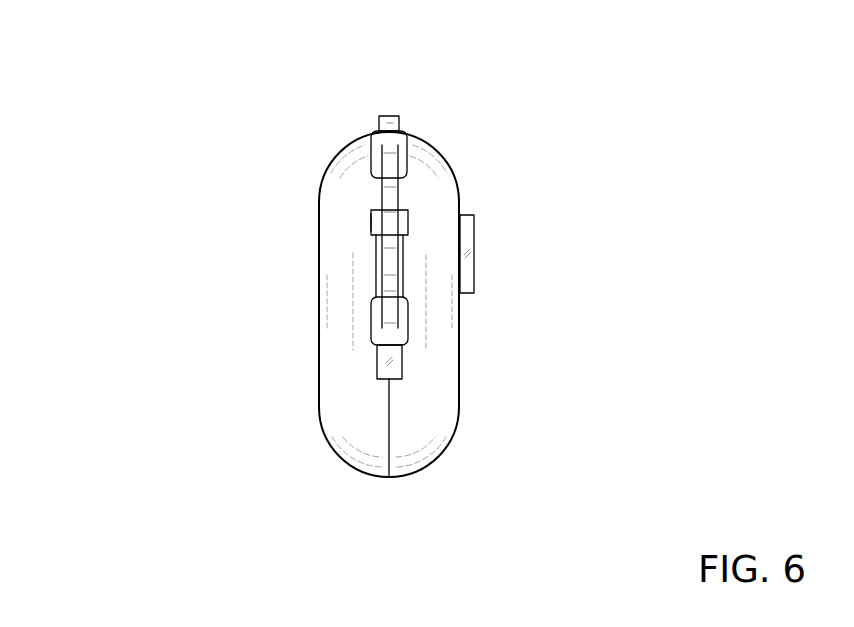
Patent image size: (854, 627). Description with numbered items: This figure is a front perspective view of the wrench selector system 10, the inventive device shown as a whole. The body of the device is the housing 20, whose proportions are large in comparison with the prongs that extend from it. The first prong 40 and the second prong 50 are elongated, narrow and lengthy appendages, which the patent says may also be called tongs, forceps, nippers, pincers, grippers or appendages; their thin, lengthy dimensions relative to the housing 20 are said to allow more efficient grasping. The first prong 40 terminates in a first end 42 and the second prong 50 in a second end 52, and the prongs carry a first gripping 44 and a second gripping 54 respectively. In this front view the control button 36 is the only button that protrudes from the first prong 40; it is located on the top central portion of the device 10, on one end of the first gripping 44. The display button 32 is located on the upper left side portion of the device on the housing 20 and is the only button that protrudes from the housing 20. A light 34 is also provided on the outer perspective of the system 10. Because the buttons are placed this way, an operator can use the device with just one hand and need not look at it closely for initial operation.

The wrench selector system 10 is at (118, 108).
The housing 20 is at (319, 377).
The display button 32 is at (474, 265).
The light 34 is at (371, 219).
The control button 36 is at (392, 116).
The first prong 40 is at (398, 200).
The first end 42 is at (408, 227).
The first gripping 44 is at (371, 175).
The second prong 50 is at (403, 372).
The second end 52 is at (403, 247).
The second gripping 54 is at (417, 350).